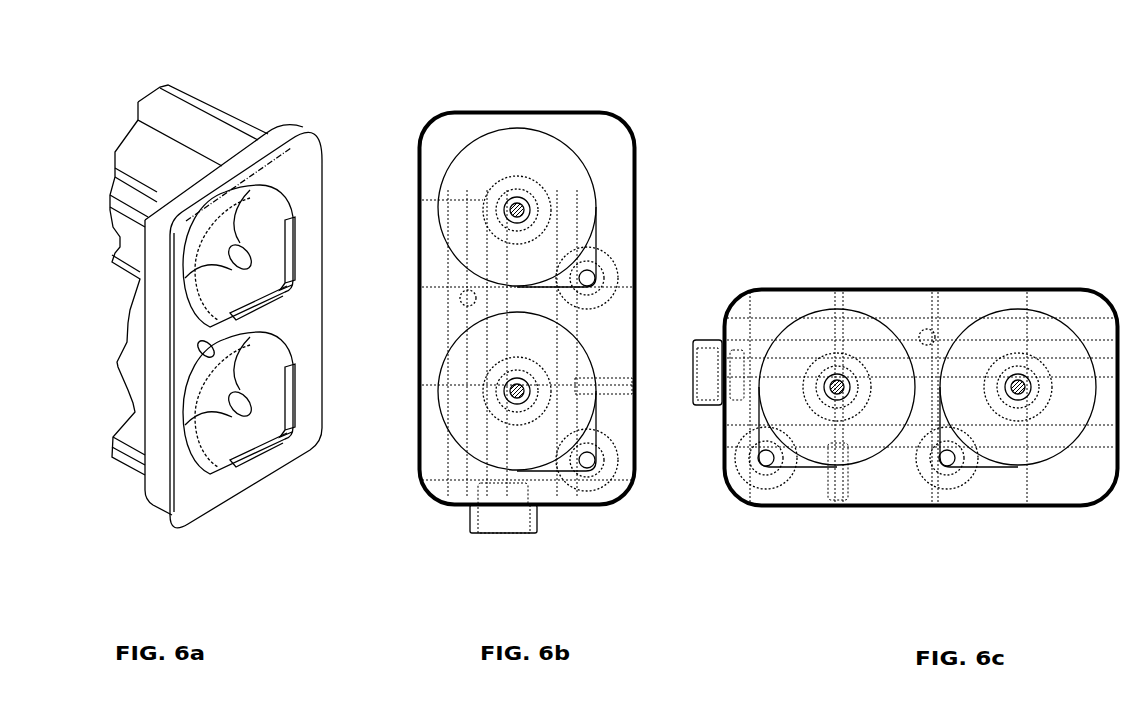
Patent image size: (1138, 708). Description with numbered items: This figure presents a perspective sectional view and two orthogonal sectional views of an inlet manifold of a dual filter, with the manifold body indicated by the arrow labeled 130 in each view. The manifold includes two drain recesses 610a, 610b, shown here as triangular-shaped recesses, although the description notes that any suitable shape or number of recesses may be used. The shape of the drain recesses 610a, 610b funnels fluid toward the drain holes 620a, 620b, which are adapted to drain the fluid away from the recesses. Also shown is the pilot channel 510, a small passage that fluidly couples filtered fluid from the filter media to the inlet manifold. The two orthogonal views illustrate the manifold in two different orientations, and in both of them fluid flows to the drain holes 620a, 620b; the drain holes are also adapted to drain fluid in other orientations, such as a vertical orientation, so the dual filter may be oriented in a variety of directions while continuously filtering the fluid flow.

In FIG. 6A, the housing 130 is at (245, 92).
In FIG. 6B, the housing 130 is at (612, 96).
In FIG. 6C, the housing 130 is at (1048, 233).
In FIG. 6A, the pilot channel 510 is at (188, 338).
In FIG. 6B, the pilot channel 510 is at (460, 299).
In FIG. 6C, the pilot channel 510 is at (925, 332).
In FIG. 6A, the drain recess 610a is at (289, 256).
In FIG. 6B, the drain recess 610a is at (553, 280).
In FIG. 6C, the drain recess 610a is at (1018, 388).
In FIG. 6A, the drain recess 610b is at (297, 418).
In FIG. 6B, the drain recess 610b is at (605, 452).
In FIG. 6C, the drain recess 610b is at (837, 388).
In FIG. 6B, the drain hole 620a is at (596, 277).
In FIG. 6C, the drain hole 620a is at (947, 466).
In FIG. 6B, the drain hole 620b is at (593, 470).
In FIG. 6C, the drain hole 620b is at (768, 466).